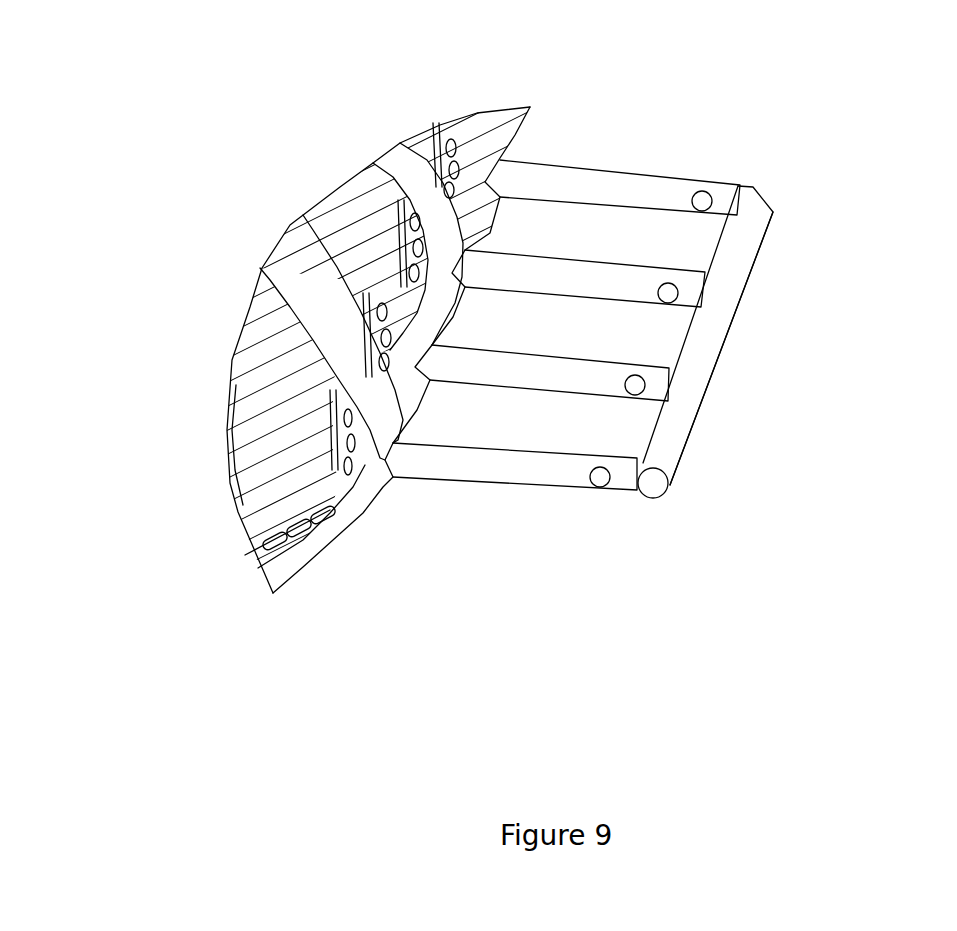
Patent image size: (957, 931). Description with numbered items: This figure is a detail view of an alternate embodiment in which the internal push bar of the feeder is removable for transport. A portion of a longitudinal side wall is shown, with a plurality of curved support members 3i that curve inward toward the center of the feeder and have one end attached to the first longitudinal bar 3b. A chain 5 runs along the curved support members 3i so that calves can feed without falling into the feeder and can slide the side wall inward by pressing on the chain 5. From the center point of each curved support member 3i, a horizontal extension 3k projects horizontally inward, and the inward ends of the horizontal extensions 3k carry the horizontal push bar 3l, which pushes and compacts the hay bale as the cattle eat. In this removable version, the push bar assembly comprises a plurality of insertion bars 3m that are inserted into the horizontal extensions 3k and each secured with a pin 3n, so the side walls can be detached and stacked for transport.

The first longitudinal bar 3b is at (240, 367).
The curved support members 3i is at (483, 147).
The chain 5 is at (287, 517).
The horizontal extensions 3k is at (535, 185).
The pin 3n is at (600, 467).
The insertion bars 3m is at (645, 463).
The horizontal push bar 3l is at (668, 440).